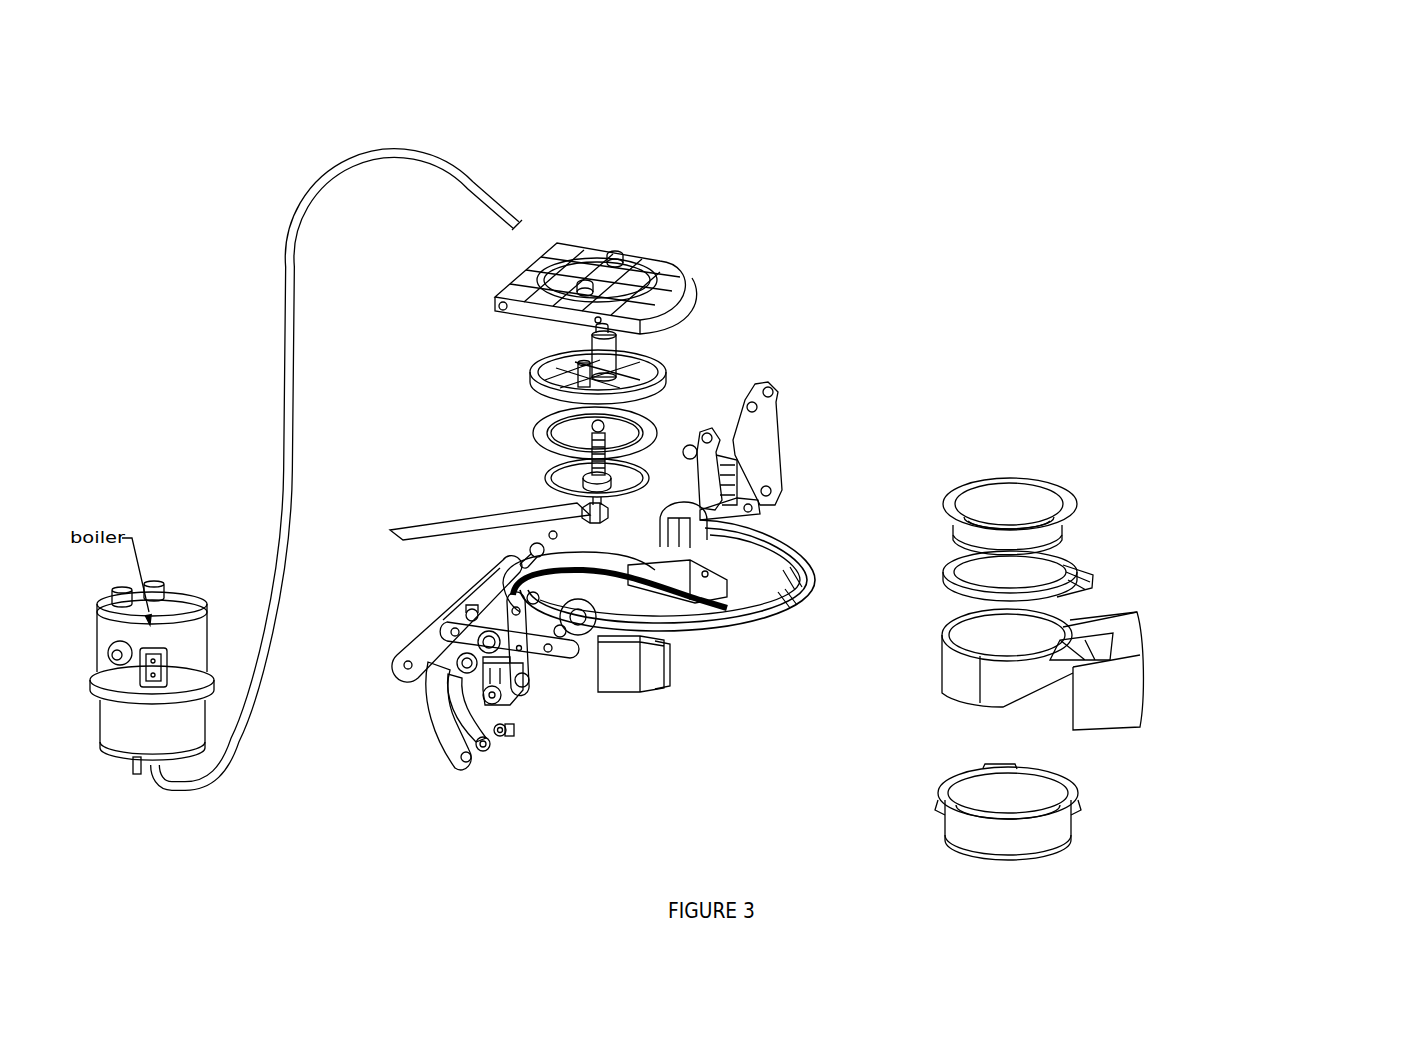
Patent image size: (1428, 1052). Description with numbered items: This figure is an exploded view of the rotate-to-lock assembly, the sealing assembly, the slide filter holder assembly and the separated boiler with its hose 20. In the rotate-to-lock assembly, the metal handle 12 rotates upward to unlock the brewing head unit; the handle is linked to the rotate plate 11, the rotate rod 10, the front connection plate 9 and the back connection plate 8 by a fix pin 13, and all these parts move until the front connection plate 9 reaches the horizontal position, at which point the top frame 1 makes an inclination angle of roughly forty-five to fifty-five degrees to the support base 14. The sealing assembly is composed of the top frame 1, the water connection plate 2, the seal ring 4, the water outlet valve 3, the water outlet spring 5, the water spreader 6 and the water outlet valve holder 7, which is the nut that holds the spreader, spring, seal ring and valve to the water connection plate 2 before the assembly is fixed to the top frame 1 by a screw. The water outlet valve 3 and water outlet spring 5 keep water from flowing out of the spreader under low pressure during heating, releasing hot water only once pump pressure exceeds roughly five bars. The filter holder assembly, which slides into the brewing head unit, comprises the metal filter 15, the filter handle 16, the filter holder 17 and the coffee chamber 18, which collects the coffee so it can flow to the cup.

The top frame 1 is at (655, 258).
The water connection plate 2 is at (660, 356).
The water outlet valve 3 is at (668, 403).
The seal ring 4 is at (540, 432).
The water outlet spring 5 is at (553, 443).
The water spreader 6 is at (548, 483).
The water outlet valve holder 7 is at (580, 524).
The back connection plate 8 is at (435, 634).
The front connection plate 9 is at (441, 746).
The rotate rod 10 is at (512, 708).
The rotate plate 11 is at (532, 695).
The metal handle 12 is at (696, 644).
The fix pin 13 is at (503, 738).
The support base 14 is at (622, 686).
The metal filter 15 is at (1038, 486).
The filter handle 16 is at (1098, 570).
The filter holder 17 is at (1110, 676).
The coffee chamber 18 is at (1025, 829).
The hose 20 is at (522, 214).